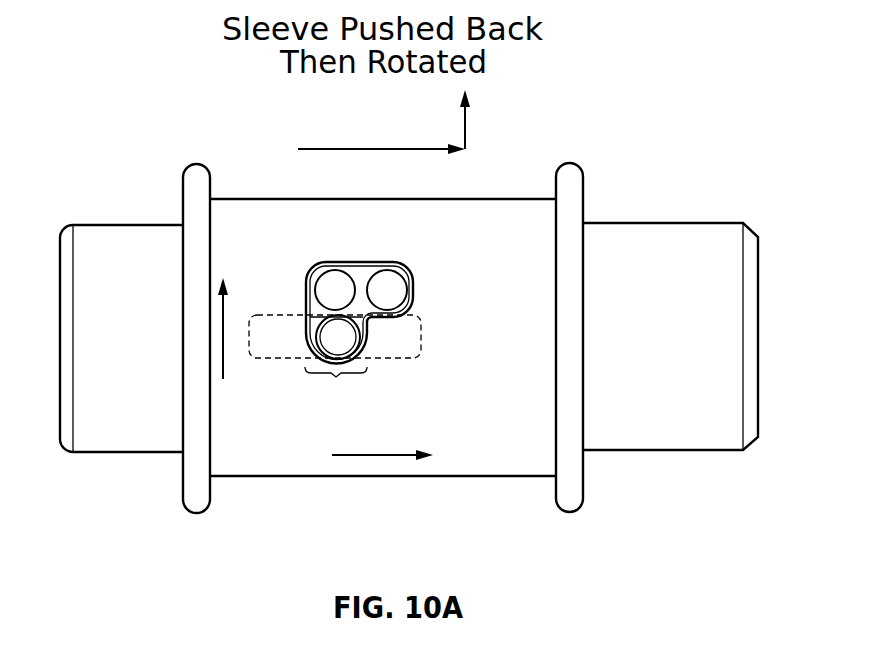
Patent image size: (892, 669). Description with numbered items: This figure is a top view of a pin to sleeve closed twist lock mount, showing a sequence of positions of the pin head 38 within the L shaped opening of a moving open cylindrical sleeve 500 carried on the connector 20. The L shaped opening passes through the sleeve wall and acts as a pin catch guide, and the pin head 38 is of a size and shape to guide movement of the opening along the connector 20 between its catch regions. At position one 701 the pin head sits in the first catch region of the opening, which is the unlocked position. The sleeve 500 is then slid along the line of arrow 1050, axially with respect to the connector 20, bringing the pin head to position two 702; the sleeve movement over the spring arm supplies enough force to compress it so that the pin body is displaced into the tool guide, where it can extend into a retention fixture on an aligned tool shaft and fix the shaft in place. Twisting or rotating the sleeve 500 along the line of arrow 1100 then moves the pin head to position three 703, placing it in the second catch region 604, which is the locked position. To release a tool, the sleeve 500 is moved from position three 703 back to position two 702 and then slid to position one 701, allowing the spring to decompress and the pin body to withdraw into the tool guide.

The connector 20 is at (677, 412).
The moving open cylindrical sleeve 500 is at (522, 329).
The arrow 1050 is at (373, 455).
The arrow 1100 is at (222, 338).
The position two 702 is at (335, 287).
The position one 701 is at (390, 295).
The position three 703 is at (389, 347).
The pin head 38 is at (336, 337).
The second catch region 604 is at (337, 373).